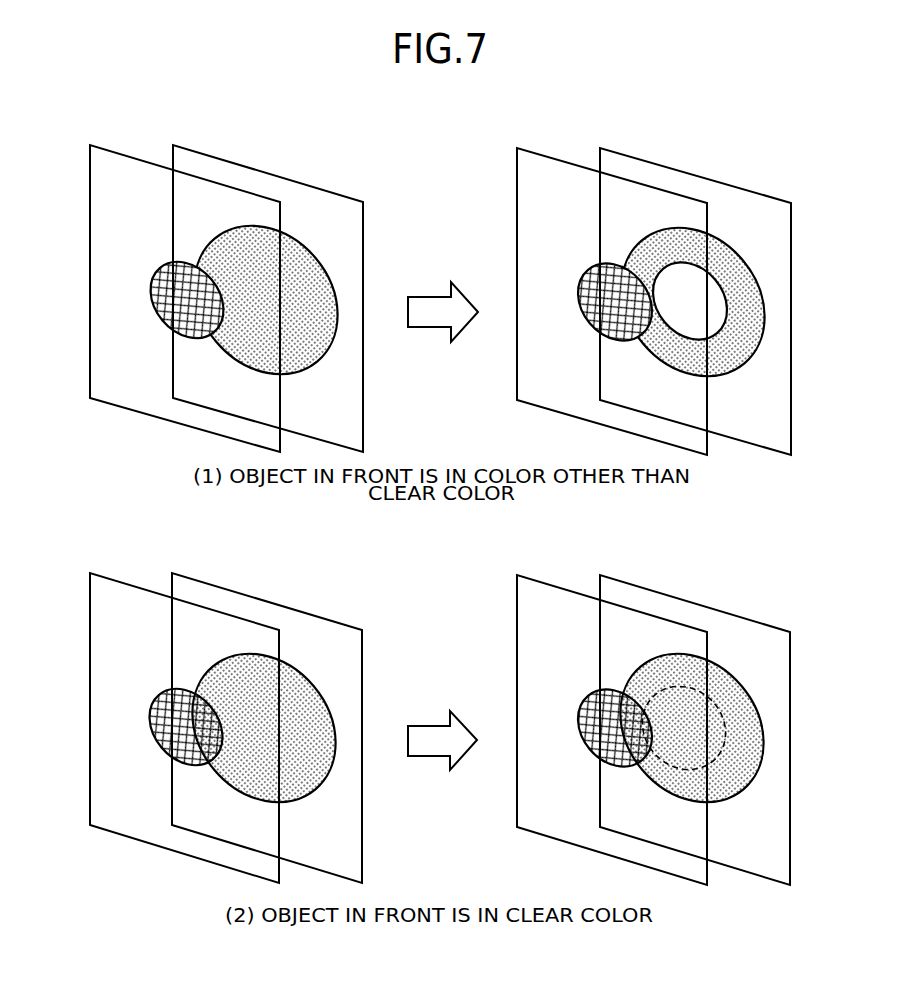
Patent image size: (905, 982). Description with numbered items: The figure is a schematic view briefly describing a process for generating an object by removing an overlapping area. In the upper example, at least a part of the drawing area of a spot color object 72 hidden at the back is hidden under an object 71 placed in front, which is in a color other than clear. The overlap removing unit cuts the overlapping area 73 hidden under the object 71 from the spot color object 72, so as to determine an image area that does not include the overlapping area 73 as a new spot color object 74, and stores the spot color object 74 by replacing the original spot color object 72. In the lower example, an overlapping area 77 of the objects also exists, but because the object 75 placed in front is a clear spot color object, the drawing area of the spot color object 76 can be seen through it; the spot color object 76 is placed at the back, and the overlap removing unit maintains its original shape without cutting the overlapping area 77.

The object placed in front 71 is at (152, 307).
The spot color object 72 is at (304, 247).
The overlapping area 73 is at (692, 306).
The new spot color object 74 is at (745, 263).
The object placed in front 75 is at (152, 735).
The spot color object 76 is at (300, 675).
The overlapping area 77 is at (762, 745).